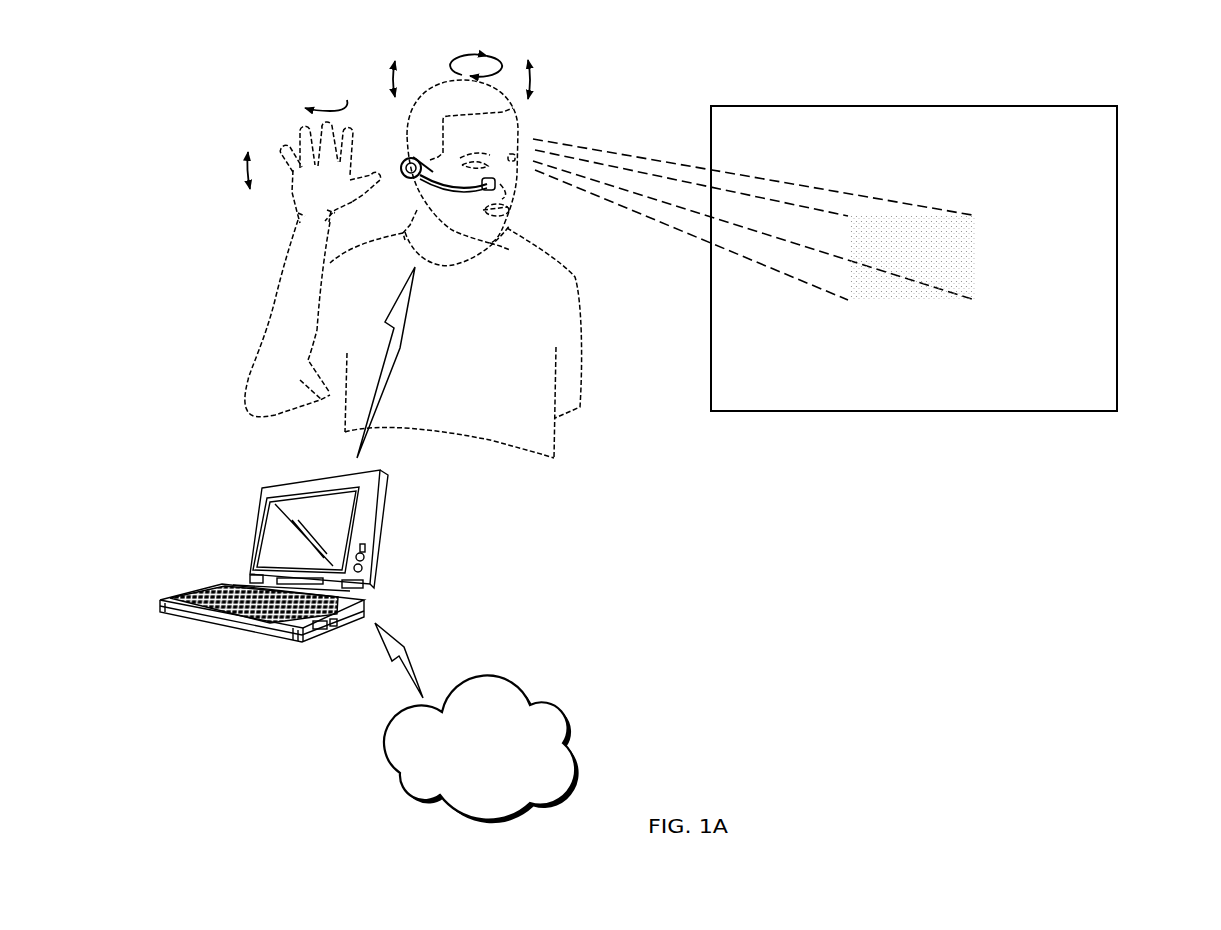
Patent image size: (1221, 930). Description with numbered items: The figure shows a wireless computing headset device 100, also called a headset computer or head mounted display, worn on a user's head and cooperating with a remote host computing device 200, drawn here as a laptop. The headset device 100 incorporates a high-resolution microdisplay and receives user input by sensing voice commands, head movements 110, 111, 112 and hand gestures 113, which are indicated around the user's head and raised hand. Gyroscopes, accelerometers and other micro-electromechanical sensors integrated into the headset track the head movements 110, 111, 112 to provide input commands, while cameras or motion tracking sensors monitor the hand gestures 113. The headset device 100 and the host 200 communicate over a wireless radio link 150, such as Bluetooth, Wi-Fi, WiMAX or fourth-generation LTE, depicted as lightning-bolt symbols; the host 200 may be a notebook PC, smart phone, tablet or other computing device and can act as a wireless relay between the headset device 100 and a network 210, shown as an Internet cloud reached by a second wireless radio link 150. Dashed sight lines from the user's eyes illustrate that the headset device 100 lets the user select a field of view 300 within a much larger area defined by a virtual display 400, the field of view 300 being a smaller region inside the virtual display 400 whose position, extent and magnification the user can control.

The wireless computing headset device 100 is at (440, 187).
The head movement 110 is at (452, 62).
The head movement 111 is at (531, 82).
The head movement 112 is at (393, 78).
The hand gesture 113 is at (245, 172).
The wireless radio link 150 is at (377, 385).
The host computing device 200 is at (380, 527).
The network 210 is at (567, 730).
The field of view 300 is at (980, 258).
The virtual display 400 is at (800, 412).